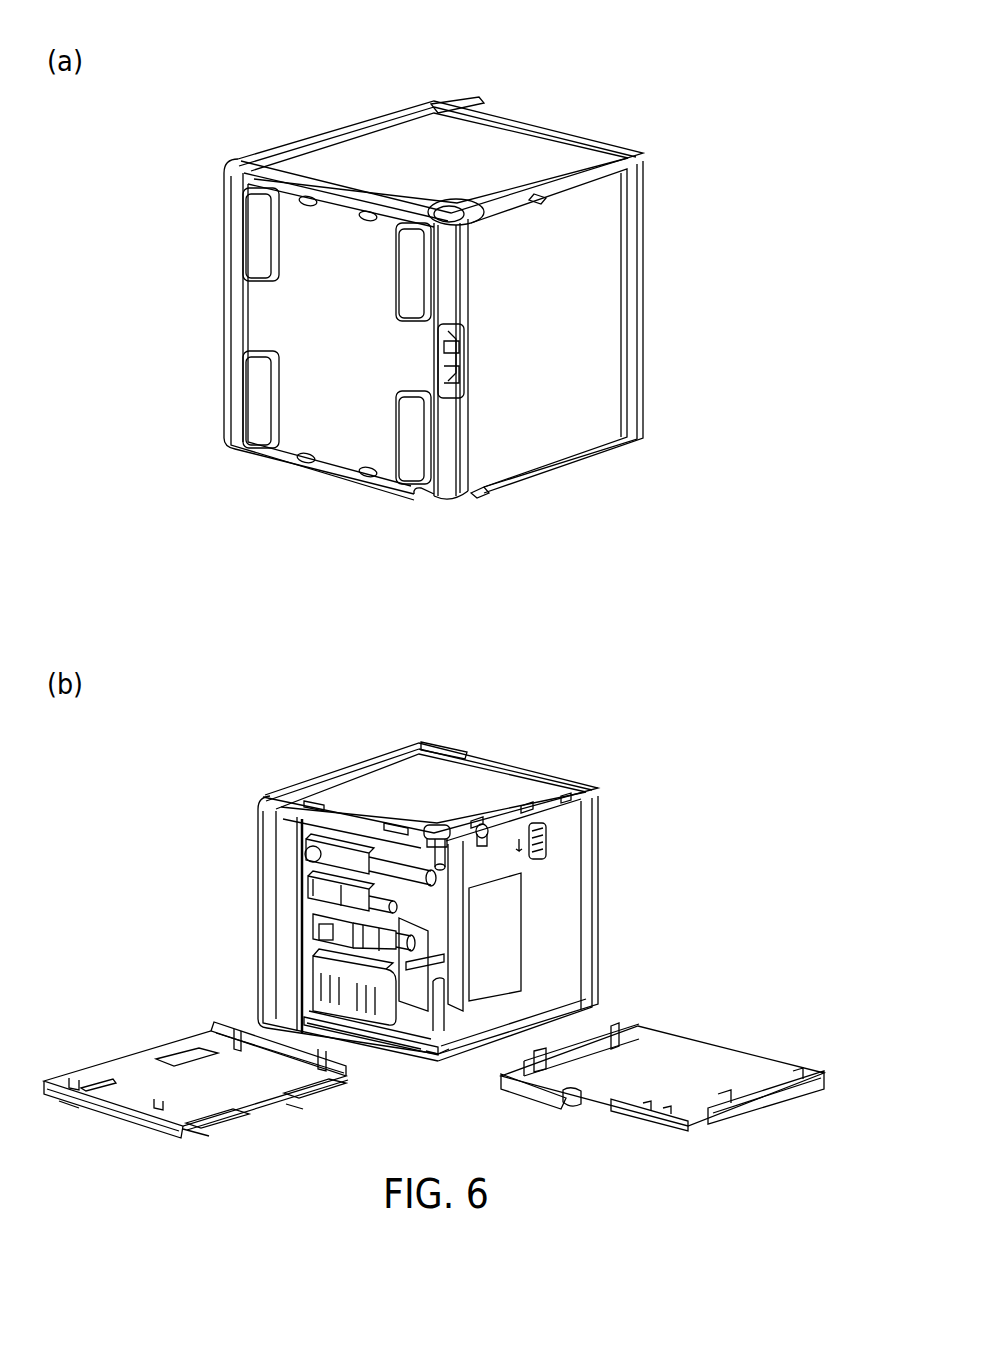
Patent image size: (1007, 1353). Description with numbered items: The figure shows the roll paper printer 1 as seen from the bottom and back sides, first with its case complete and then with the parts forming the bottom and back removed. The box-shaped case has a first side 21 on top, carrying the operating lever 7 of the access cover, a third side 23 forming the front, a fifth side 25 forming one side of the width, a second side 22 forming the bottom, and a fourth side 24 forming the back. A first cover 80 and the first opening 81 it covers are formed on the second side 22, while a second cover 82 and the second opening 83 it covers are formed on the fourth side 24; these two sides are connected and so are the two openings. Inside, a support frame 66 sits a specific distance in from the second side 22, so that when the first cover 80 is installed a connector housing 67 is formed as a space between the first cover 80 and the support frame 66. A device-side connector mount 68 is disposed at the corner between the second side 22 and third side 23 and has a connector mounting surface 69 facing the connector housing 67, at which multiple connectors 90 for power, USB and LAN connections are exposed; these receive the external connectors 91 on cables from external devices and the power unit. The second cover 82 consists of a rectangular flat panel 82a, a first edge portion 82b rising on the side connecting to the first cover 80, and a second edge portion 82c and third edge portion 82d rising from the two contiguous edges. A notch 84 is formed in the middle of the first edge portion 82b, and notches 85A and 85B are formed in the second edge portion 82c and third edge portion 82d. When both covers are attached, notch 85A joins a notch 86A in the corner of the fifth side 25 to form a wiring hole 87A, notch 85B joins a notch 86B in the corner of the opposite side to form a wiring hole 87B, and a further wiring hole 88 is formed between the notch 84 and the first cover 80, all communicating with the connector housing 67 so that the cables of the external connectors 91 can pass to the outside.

The roll paper printer 1 is at (228, 64).
The operating lever 7 is at (470, 103).
The first side 21 is at (613, 140).
The second side 22 is at (278, 300).
The third side 23 is at (332, 140).
The fourth side 24 is at (593, 287).
The fifth side 25 is at (413, 143).
The support frame 66 is at (537, 907).
The connector housing 67 is at (357, 1040).
The device-side connector mount 68 is at (290, 945).
The connector mounting surface 69 is at (312, 973).
The first cover 80 is at (147, 1080).
The first opening 81 is at (247, 322).
The second cover 82 is at (662, 1068).
The flat panel 82a is at (727, 1070).
The first edge portion 82b is at (518, 1087).
The second edge portion 82c is at (757, 1103).
The third edge portion 82d is at (627, 1027).
The second opening 83 is at (640, 348).
The notch 84 is at (472, 384).
The notch 85A is at (537, 201).
The notch 85B is at (473, 496).
The notch 86A is at (449, 215).
The notch 86B is at (420, 493).
The wiring hole 87A is at (462, 210).
The wiring hole 87B is at (440, 515).
The wiring hole 88 is at (455, 345).
The connectors 90 is at (300, 868).
The external connectors 91 is at (347, 927).